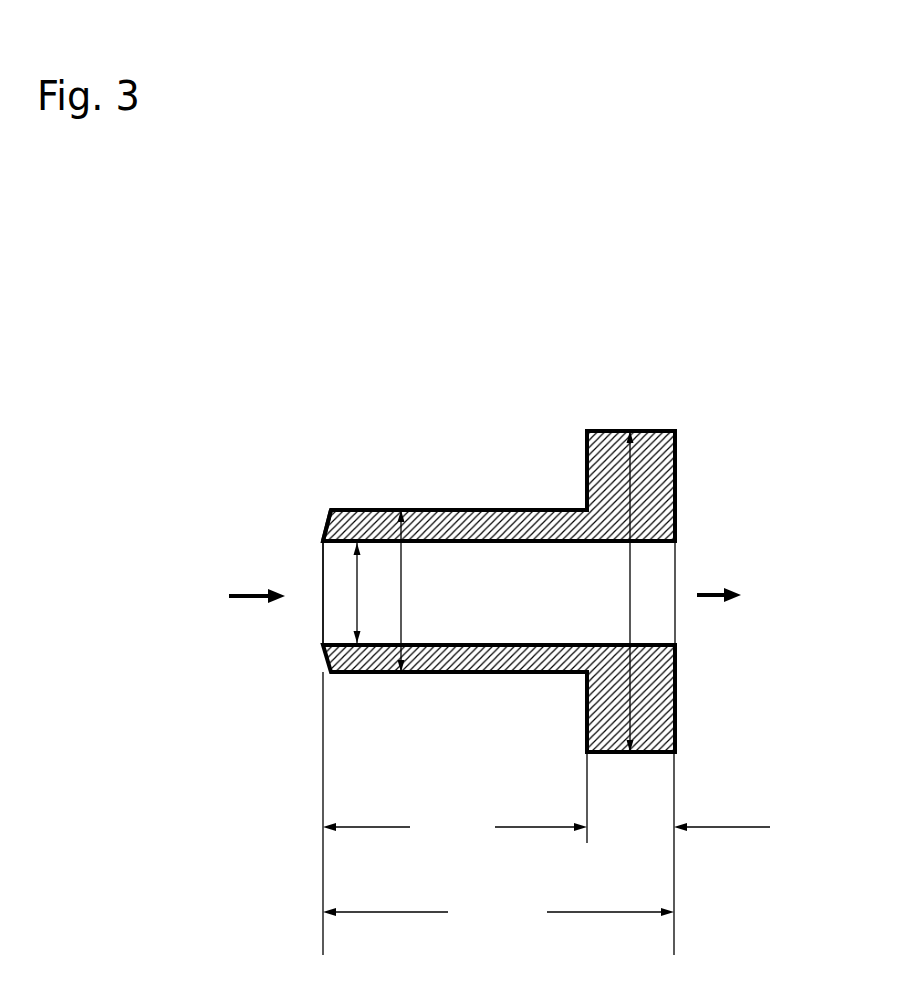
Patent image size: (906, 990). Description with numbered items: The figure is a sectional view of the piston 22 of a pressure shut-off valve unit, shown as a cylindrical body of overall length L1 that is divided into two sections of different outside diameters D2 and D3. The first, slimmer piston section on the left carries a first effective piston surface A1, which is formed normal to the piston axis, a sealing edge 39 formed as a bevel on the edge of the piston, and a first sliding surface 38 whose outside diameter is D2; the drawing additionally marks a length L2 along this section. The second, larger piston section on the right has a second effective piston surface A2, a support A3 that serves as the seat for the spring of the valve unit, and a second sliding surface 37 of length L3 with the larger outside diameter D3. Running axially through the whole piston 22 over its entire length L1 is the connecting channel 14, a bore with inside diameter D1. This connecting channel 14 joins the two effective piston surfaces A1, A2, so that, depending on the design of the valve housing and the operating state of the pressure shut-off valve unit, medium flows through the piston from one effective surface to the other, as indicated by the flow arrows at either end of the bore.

The connecting channel 14 is at (522, 590).
The piston 22 is at (652, 488).
The second sliding surface 37 is at (610, 423).
The first sliding surface 38 is at (449, 505).
The sealing edge 39 is at (326, 508).
The first effective piston surface A1 is at (310, 555).
The second effective piston surface A2 is at (698, 520).
The support for the spring A3 is at (565, 500).
The inside diameter D1 is at (370, 593).
The outside diameter of first piston section D2 is at (418, 591).
The outside diameter of second piston section D3 is at (642, 591).
The overall length L1 is at (498, 912).
The tube length L2 is at (455, 829).
The length of sliding surface L3 is at (696, 829).